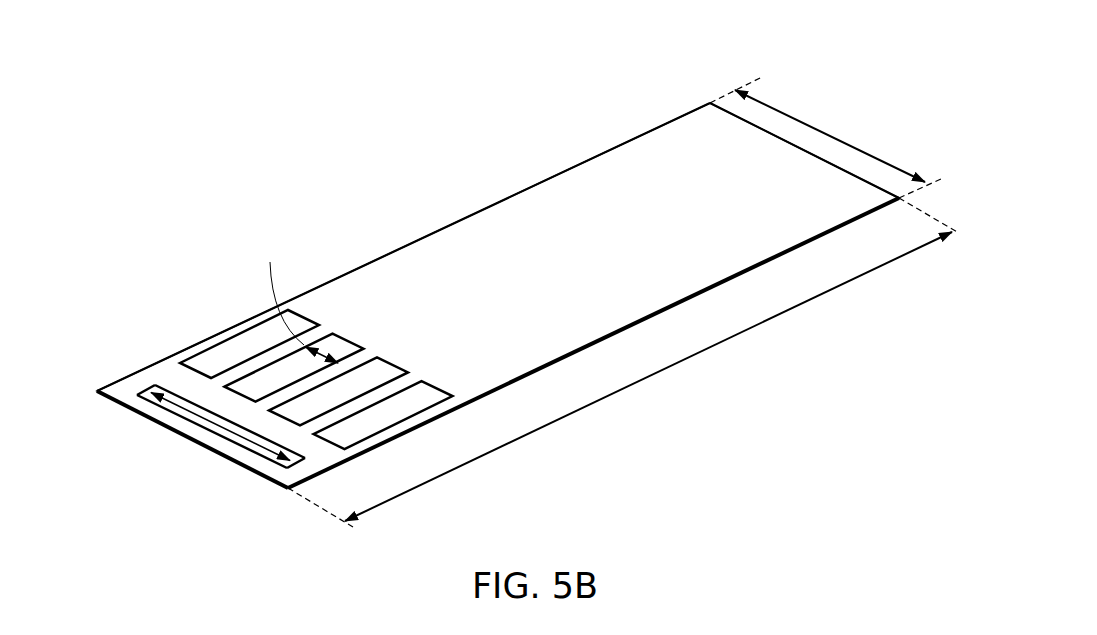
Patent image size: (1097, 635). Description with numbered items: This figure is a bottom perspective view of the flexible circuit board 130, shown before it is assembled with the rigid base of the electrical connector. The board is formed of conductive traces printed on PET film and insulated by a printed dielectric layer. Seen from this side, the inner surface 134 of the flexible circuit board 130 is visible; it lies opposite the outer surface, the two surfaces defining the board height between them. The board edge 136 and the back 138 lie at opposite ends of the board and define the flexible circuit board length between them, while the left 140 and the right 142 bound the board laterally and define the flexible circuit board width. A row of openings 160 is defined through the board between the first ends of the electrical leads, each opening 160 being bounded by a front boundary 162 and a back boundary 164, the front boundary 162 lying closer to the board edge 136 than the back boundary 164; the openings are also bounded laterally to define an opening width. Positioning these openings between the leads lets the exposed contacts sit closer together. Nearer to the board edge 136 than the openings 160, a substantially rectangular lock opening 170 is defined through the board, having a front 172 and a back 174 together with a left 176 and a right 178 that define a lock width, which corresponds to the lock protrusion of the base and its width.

The flexible circuit board 130 is at (296, 176).
The inner surface 134 is at (642, 150).
The board edge 136 is at (118, 403).
The back 138 is at (808, 77).
The left 140 is at (483, 207).
The right 142 is at (578, 353).
The openings 160 is at (245, 345).
The front boundary 162 is at (339, 438).
The back boundary 164 is at (313, 316).
The lock opening 170 is at (243, 438).
The front 172 is at (178, 405).
The back 174 is at (205, 413).
The left 176 is at (162, 413).
The right 178 is at (272, 463).